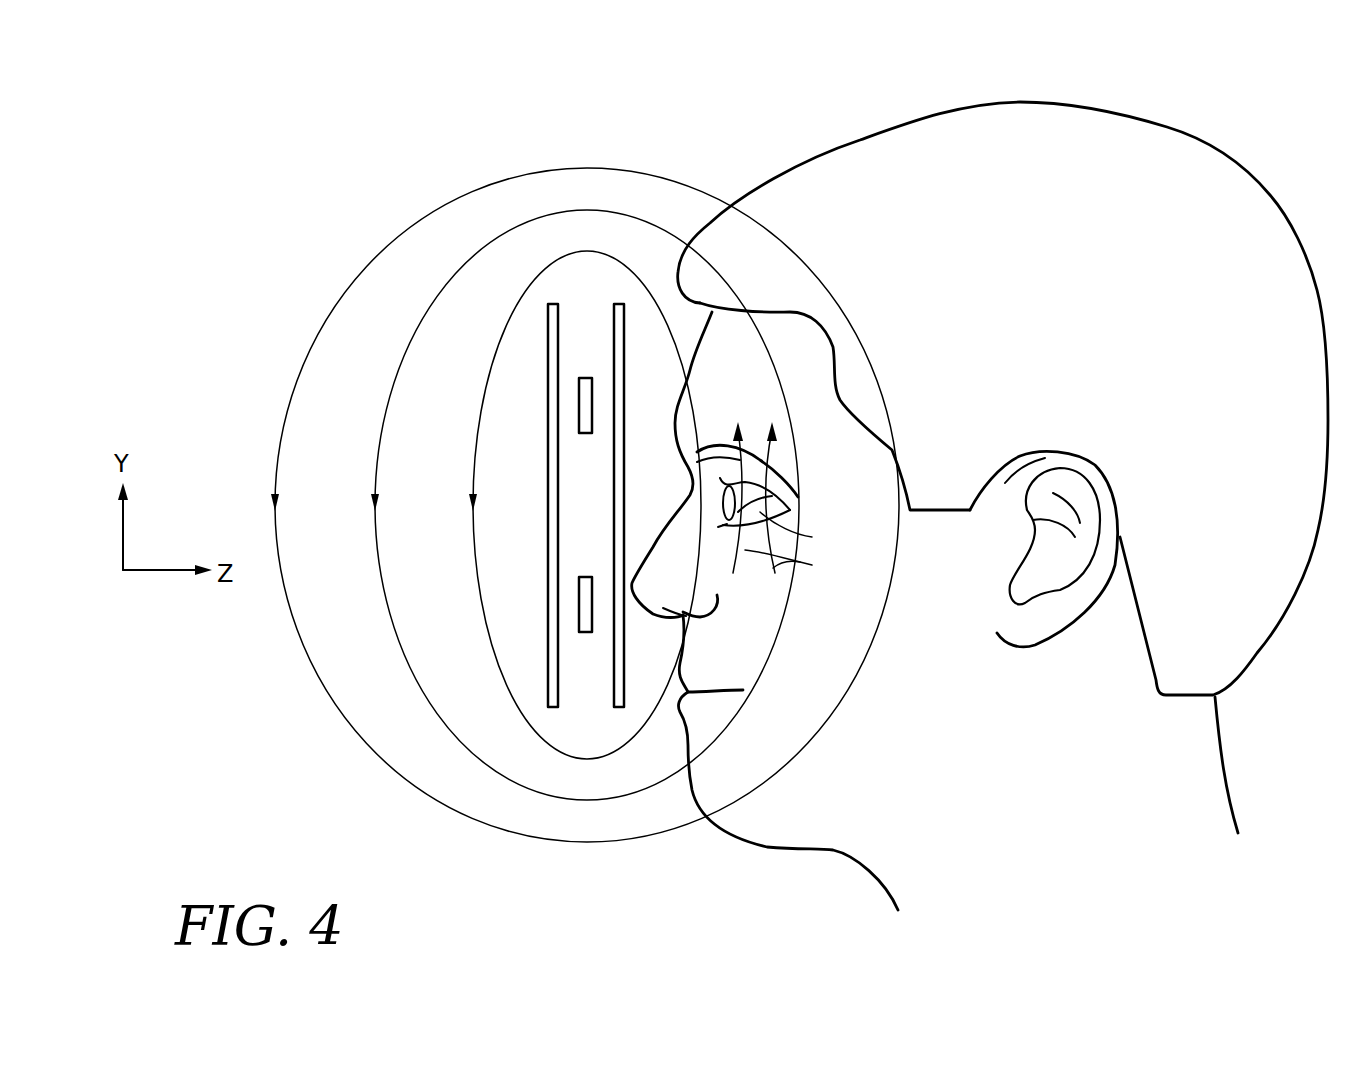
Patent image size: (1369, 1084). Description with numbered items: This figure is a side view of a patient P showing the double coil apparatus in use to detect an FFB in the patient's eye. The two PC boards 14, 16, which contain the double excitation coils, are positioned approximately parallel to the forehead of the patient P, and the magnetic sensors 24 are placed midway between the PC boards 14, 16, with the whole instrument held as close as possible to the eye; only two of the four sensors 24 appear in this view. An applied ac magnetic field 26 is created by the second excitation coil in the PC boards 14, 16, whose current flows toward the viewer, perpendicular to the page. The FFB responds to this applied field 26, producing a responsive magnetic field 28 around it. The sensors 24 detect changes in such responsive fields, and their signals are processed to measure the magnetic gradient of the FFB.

The PC board 14 is at (625, 492).
The PC board 16 is at (548, 493).
The magnetic sensors 24 is at (579, 405).
The applied magnetic field 26 is at (472, 452).
The responsive magnetic field 28 is at (812, 565).
The ferromagnetic foreign body FFB is at (812, 537).
The patient P is at (1270, 195).